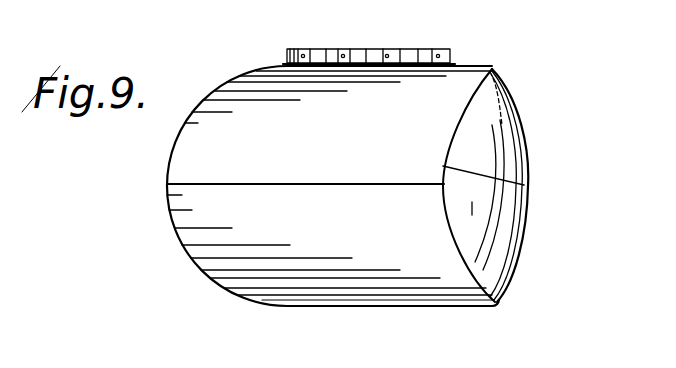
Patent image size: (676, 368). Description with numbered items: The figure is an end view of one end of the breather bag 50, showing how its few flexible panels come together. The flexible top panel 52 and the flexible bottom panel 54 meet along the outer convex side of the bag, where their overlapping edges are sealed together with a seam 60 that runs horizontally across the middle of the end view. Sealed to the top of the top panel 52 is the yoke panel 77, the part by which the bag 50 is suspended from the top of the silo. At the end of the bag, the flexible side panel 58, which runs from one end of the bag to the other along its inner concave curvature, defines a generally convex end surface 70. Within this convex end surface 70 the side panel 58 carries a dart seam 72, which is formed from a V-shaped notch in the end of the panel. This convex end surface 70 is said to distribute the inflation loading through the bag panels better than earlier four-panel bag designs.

The bag 50 is at (152, 169).
The flexible top panel 52 is at (241, 94).
The flexible bottom panel 54 is at (209, 218).
The flexible side panel 58 is at (499, 96).
The seam 60 is at (221, 184).
The convex end surface 70 is at (520, 73).
The dart seam 72 is at (481, 172).
The yoke panel 77 is at (412, 49).